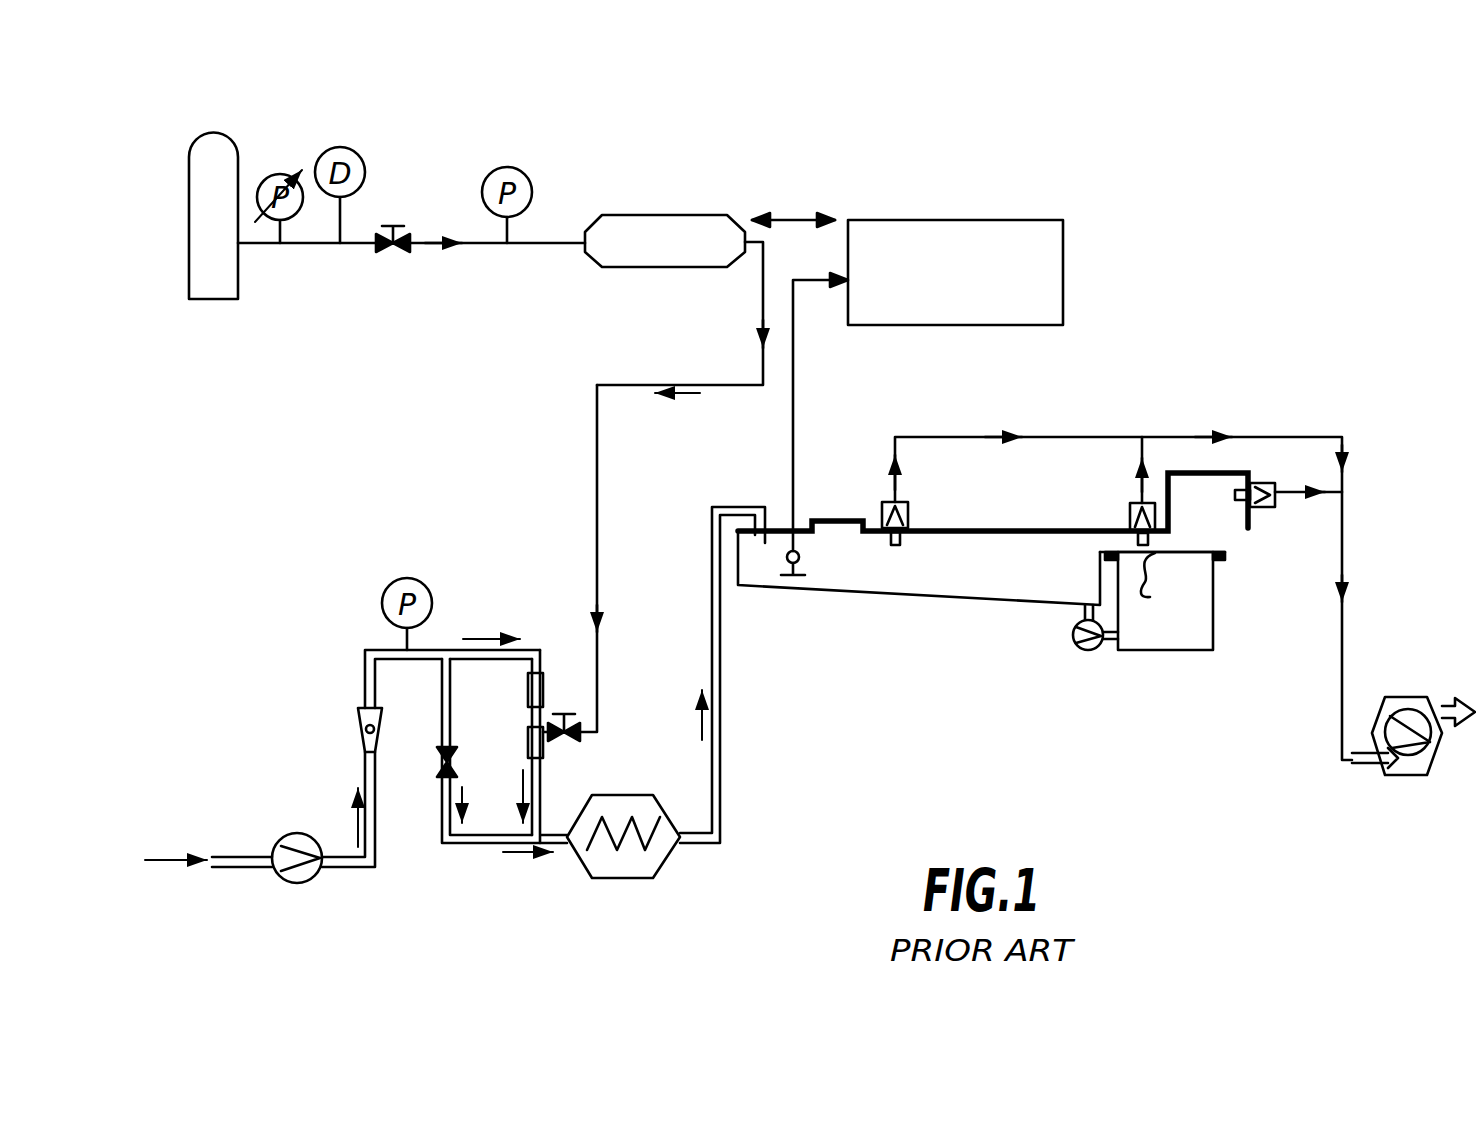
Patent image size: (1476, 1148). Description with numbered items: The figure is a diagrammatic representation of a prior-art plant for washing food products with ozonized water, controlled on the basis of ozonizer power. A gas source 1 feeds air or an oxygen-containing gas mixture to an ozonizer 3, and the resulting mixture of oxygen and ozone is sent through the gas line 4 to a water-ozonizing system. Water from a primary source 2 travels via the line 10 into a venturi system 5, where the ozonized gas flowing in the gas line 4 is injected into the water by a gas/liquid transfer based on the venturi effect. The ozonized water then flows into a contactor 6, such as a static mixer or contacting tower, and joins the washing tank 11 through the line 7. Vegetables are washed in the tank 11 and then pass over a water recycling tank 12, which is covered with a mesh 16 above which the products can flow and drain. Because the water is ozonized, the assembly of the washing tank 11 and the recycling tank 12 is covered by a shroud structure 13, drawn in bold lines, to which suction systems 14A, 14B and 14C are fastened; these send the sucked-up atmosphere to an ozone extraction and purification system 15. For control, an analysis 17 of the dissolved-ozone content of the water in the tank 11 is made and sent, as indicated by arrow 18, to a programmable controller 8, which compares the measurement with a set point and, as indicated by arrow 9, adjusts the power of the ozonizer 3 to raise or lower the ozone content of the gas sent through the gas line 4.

The gas source 1 is at (225, 165).
The primary source of water 2 is at (164, 860).
The ozonizer 3 is at (642, 215).
The gas line 4 is at (597, 503).
The venturi system 5 is at (527, 718).
The contactor 6 is at (612, 795).
The line 7 is at (712, 633).
The programmable controller 8 is at (930, 220).
The arrow 9 is at (790, 220).
The line 10 is at (376, 822).
The tank 11 is at (990, 600).
The water recycling tank 12 is at (1170, 652).
The shroud structure 13 is at (1035, 528).
The suction system 14A is at (938, 497).
The suction system 14B is at (1128, 501).
The suction system 14C is at (1267, 510).
The ozone extraction and purification system 15 is at (1395, 686).
The mesh 16 is at (1161, 586).
The analysis 17 is at (800, 557).
The arrow 18 is at (795, 436).